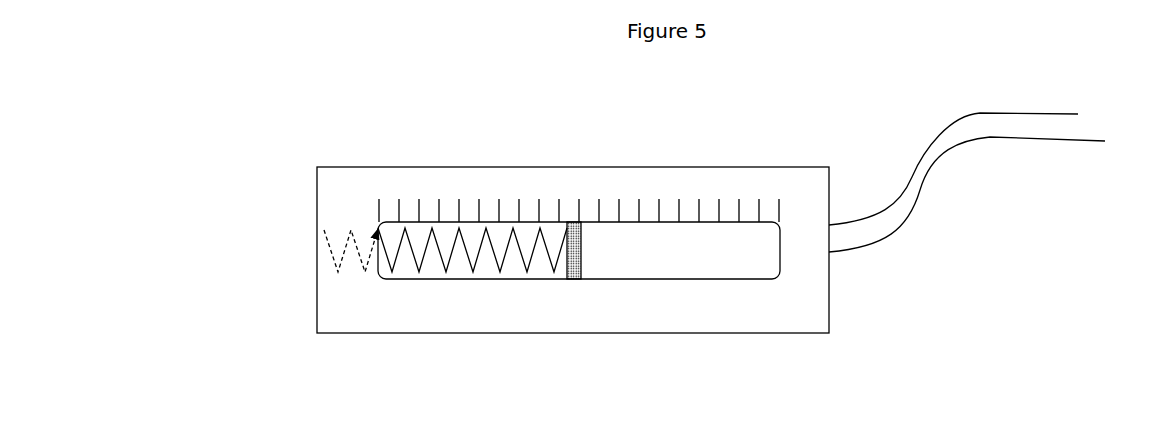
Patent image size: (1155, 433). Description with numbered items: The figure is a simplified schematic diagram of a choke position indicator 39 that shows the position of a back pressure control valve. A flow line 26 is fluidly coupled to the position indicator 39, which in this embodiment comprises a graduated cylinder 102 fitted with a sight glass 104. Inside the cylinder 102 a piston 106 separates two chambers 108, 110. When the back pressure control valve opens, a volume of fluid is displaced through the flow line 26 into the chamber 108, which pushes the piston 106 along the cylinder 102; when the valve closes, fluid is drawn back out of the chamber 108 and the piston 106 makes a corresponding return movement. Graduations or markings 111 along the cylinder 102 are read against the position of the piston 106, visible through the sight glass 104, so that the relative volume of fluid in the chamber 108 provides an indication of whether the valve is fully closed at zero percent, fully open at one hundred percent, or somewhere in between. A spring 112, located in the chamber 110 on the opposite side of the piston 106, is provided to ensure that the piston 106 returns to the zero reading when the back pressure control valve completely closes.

The position indicator 39 is at (553, 138).
The graduated cylinder 102 is at (740, 167).
The sight glass 104 is at (708, 282).
The piston 106 is at (572, 232).
The chamber 108 is at (638, 262).
The chamber 110 is at (460, 270).
The graduations or markings 111 is at (620, 180).
The spring 112 is at (495, 258).
The flow line 26 is at (1003, 136).